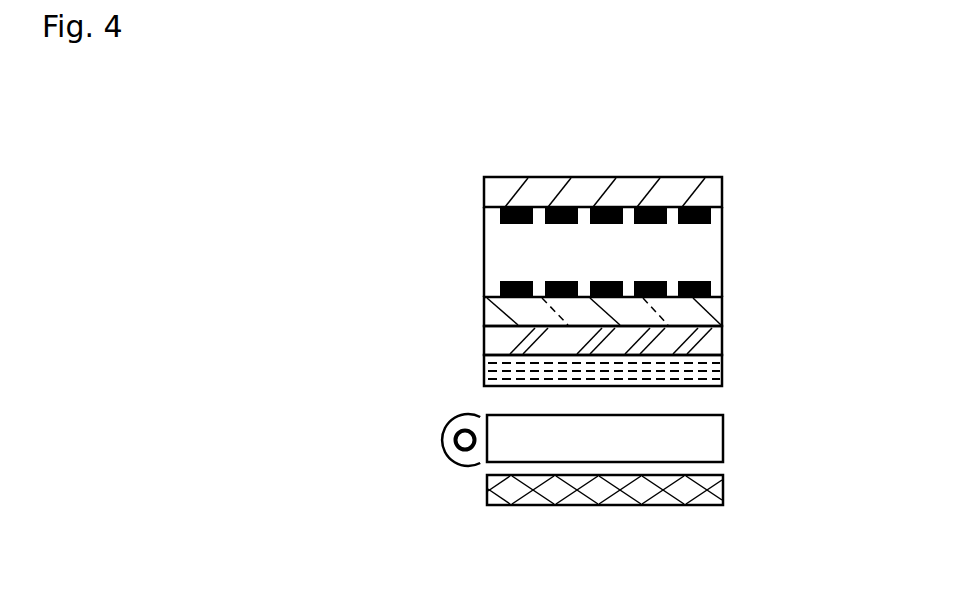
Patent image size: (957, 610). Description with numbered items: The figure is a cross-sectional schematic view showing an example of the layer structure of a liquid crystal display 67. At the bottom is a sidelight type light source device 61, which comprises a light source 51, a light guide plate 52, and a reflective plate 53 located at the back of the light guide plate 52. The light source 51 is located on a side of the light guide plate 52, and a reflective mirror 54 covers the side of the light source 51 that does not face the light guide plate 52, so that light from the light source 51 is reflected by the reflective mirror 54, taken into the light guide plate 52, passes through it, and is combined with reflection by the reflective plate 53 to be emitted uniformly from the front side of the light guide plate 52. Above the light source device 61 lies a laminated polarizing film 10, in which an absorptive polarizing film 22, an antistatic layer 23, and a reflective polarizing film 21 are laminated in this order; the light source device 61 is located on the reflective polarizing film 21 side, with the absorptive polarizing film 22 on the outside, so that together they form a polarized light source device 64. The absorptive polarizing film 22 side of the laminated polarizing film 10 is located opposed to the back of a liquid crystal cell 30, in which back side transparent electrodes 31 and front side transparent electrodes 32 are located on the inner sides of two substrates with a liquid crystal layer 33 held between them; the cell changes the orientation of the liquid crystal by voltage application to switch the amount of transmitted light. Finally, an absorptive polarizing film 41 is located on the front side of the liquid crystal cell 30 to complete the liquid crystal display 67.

The laminated polarizing film 10 is at (427, 298).
The reflective polarizing film 21 is at (737, 341).
The absorptive polarizing film 22 is at (737, 311).
The antistatic layer 23 is at (737, 370).
The liquid crystal cell 30 is at (457, 208).
The back side transparent electrodes 31 is at (713, 287).
The front side transparent electrodes 32 is at (713, 215).
The liquid crystal layer 33 is at (708, 252).
The absorptive polarizing film 41 is at (723, 190).
The light source 51 is at (462, 458).
The light guide plate 52 is at (723, 430).
The reflective plate 53 is at (723, 487).
The reflective mirror 54 is at (442, 445).
The light source device 61 is at (383, 417).
The polarized light source device 64 is at (308, 299).
The liquid crystal display 67 is at (234, 179).